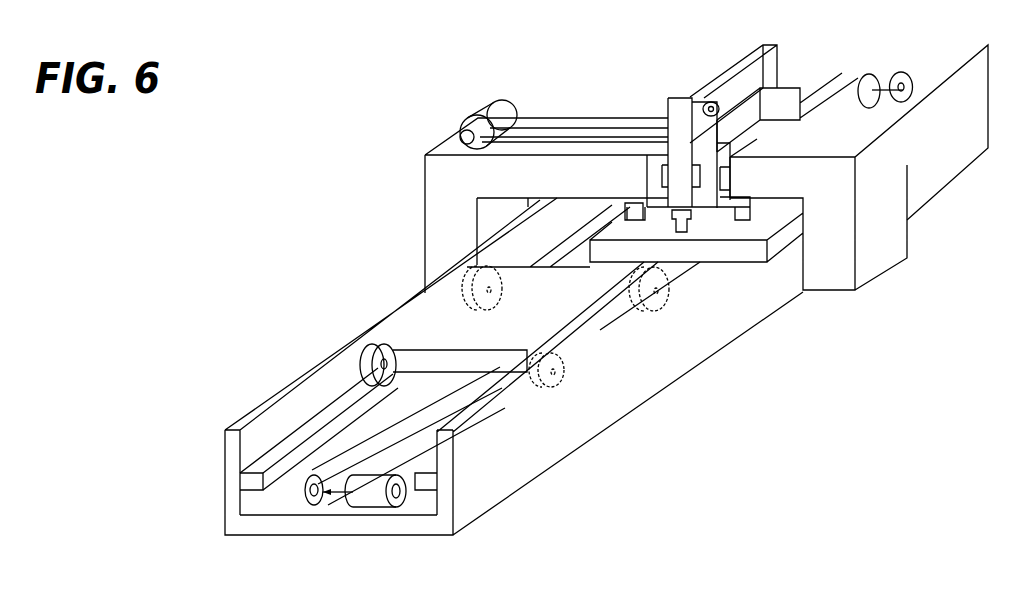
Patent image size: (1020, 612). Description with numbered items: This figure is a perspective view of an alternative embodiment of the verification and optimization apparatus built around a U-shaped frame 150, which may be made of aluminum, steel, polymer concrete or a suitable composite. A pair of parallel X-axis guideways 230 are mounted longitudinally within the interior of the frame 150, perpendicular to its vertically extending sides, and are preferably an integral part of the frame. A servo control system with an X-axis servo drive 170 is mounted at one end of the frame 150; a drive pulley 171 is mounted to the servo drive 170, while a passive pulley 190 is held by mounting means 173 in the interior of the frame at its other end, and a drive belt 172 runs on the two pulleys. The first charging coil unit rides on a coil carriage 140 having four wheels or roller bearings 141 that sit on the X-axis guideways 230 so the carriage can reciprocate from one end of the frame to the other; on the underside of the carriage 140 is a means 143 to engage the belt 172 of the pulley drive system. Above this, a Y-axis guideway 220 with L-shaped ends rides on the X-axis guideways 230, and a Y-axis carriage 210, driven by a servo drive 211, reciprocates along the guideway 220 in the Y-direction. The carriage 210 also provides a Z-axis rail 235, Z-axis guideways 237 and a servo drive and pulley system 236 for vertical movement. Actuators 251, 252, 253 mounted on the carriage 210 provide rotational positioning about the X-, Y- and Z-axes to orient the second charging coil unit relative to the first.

The carriage 140 is at (477, 330).
The wheels or roller bearings 141 is at (365, 340).
The means to engage the belt 143 is at (470, 375).
The U-shaped frame 150 is at (712, 262).
The servo drive 170 is at (350, 505).
The drive pulley 171 is at (285, 512).
The drive belt 172 is at (850, 76).
The mounting means 173 is at (908, 68).
The passive pulley 190 is at (888, 74).
The Y-axis carriage 210 is at (737, 173).
The servo drive 211 is at (490, 105).
The Y-axis guideway 220 is at (893, 225).
The X-axis guideways 230 is at (313, 428).
The Z-axis rail 235 is at (681, 128).
The servo drive and pulley system 236 is at (705, 108).
The guideways 237 is at (692, 175).
The actuator 251 is at (763, 340).
The actuator 252 is at (763, 340).
The actuator 253 is at (687, 325).